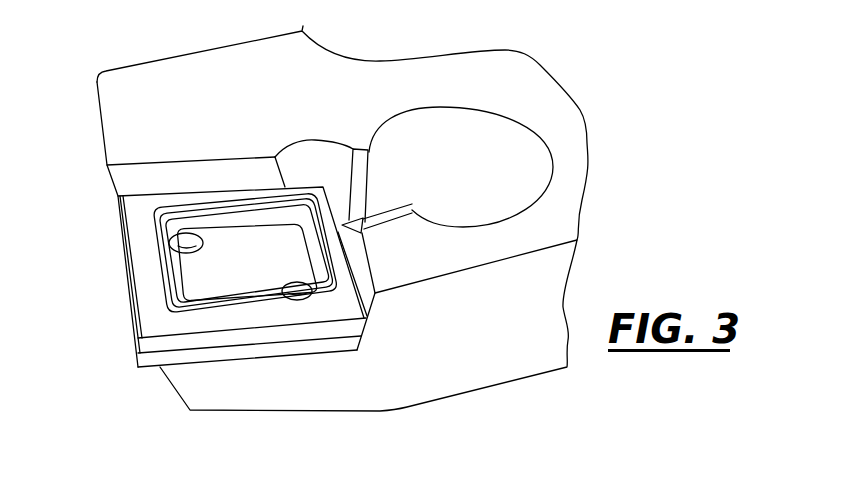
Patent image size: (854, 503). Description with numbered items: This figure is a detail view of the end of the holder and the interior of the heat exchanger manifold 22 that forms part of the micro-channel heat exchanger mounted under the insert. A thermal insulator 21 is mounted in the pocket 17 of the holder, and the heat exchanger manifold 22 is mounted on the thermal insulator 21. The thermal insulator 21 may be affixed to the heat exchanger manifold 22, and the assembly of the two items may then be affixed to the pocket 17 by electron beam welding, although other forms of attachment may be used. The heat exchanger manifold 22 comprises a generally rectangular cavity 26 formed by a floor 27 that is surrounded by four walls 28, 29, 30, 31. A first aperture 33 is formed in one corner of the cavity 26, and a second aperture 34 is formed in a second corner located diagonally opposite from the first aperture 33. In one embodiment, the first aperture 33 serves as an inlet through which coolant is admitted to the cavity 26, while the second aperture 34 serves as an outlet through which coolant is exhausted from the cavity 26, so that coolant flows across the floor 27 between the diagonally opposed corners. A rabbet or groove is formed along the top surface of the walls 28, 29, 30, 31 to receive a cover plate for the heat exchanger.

The pocket 17 is at (140, 178).
The thermal insulator 21 is at (284, 356).
The heat exchanger manifold 22 is at (345, 332).
The cavity 26 is at (212, 278).
The floor 27 is at (190, 295).
The wall 28 is at (142, 252).
The wall 29 is at (217, 197).
The wall 30 is at (328, 215).
The wall 31 is at (200, 322).
The first aperture 33 is at (182, 238).
The second aperture 34 is at (310, 282).